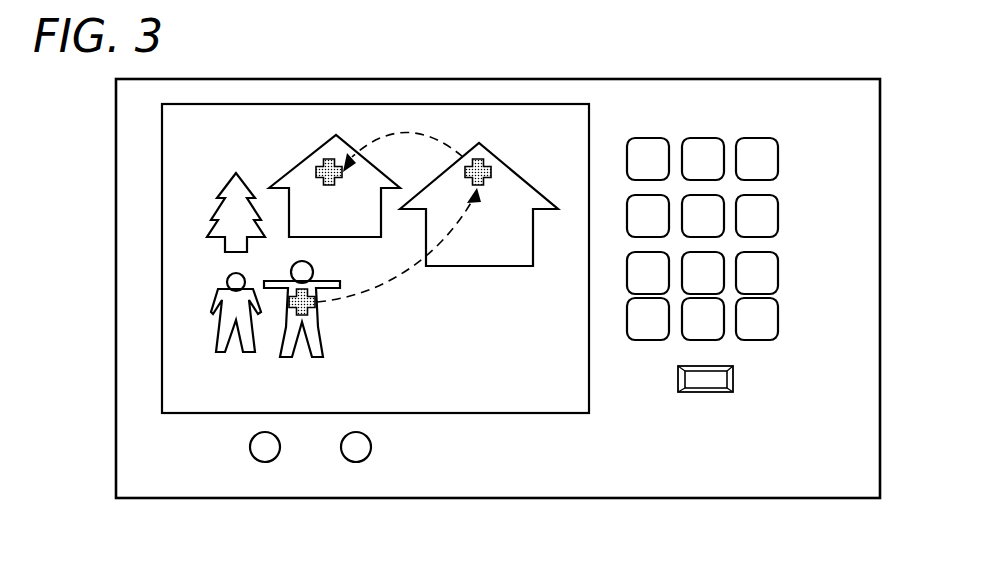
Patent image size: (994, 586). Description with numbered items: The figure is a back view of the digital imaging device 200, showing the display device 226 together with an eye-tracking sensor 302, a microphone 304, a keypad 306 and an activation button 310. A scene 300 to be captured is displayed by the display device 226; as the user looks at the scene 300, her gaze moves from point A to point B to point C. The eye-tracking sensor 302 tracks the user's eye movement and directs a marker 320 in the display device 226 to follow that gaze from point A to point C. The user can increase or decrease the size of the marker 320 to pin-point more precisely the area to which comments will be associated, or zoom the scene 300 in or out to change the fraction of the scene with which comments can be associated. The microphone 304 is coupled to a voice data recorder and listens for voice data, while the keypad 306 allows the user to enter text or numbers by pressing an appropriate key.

The digital imaging device 200 is at (408, 79).
The display device 226 is at (160, 305).
The scene 300 is at (522, 372).
The eye-tracking sensor 302 is at (267, 462).
The microphone 304 is at (354, 462).
The keypad 306 is at (788, 128).
The activation button 310 is at (735, 382).
The marker 320 is at (491, 170).